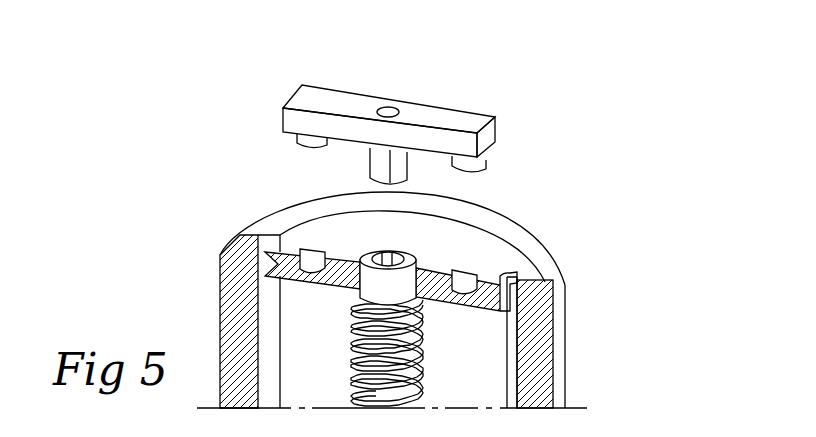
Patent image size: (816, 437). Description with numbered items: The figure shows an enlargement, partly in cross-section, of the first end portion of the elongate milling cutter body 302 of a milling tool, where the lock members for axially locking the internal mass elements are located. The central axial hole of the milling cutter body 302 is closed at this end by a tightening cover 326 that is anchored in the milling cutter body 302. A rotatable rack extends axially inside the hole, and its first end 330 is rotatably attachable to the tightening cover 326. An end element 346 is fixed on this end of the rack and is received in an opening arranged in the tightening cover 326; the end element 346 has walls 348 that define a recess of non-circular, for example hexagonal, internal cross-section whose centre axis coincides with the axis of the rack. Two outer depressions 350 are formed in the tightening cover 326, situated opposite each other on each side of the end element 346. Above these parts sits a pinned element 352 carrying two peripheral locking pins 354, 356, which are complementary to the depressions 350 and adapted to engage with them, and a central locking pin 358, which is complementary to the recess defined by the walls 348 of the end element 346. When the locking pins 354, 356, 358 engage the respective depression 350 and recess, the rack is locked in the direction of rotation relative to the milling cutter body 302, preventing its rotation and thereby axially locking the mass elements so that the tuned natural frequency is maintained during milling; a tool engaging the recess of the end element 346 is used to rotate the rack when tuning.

The milling cutter body 302 is at (597, 279).
The tightening cover 326 is at (472, 252).
The first end of the rack 330 is at (393, 328).
The end element 346 is at (347, 293).
The walls of the end element 348 is at (391, 255).
The outer depressions 350 is at (312, 250).
The pinned element 352 is at (457, 77).
The peripheral locking pin 354 is at (300, 146).
The peripheral locking pin 356 is at (466, 167).
The central locking pin 358 is at (383, 164).